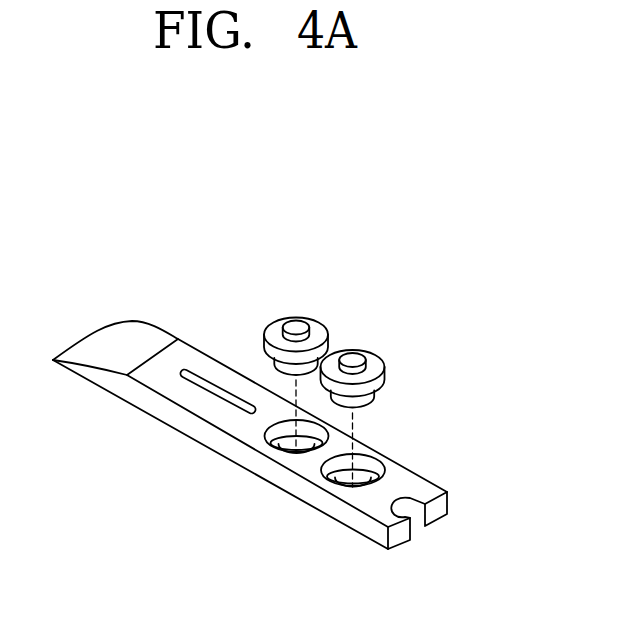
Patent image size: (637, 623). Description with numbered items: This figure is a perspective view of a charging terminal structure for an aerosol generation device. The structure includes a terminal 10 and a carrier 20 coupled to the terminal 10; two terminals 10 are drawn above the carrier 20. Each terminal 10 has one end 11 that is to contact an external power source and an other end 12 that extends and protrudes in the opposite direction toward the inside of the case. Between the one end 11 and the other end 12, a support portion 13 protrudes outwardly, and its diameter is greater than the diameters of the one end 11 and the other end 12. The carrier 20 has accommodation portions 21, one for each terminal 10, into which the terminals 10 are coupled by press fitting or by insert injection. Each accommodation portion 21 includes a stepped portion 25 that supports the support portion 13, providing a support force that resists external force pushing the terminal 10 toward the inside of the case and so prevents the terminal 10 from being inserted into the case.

The terminal 10 is at (266, 310).
The one end 11 is at (355, 356).
The other end 12 is at (365, 406).
The support portion 13 is at (377, 365).
The carrier 20 is at (250, 438).
The accommodation portion 21 is at (268, 444).
The stepped portion 25 is at (296, 444).